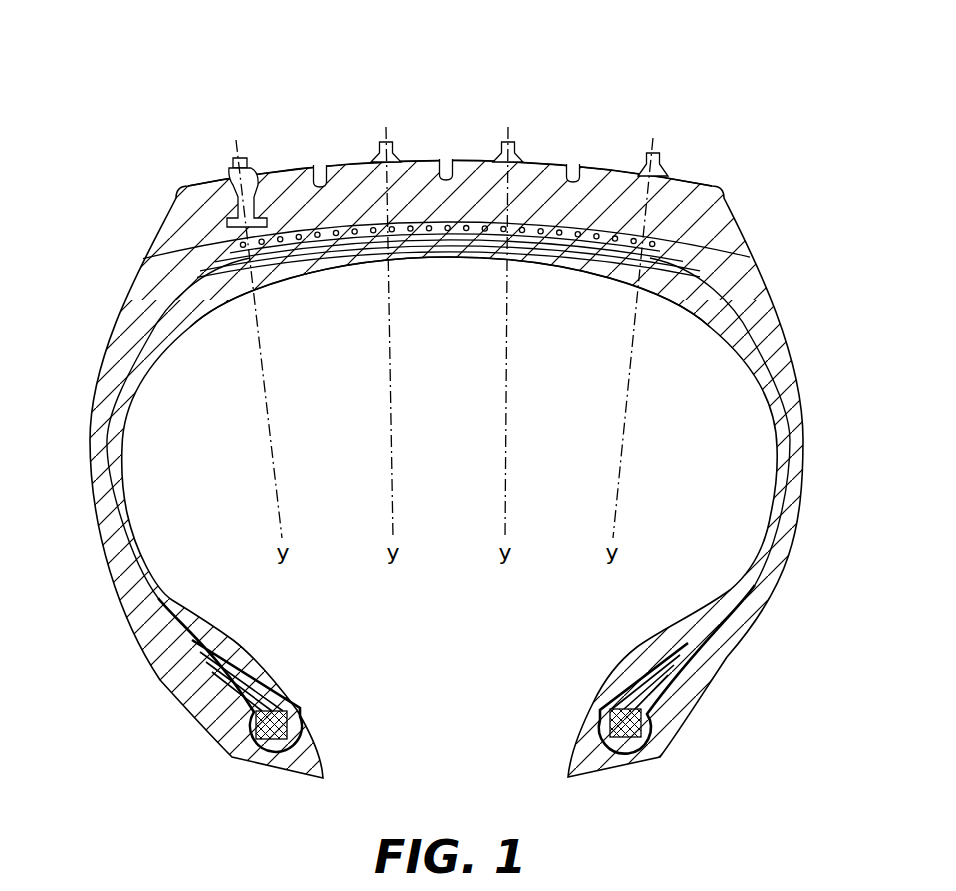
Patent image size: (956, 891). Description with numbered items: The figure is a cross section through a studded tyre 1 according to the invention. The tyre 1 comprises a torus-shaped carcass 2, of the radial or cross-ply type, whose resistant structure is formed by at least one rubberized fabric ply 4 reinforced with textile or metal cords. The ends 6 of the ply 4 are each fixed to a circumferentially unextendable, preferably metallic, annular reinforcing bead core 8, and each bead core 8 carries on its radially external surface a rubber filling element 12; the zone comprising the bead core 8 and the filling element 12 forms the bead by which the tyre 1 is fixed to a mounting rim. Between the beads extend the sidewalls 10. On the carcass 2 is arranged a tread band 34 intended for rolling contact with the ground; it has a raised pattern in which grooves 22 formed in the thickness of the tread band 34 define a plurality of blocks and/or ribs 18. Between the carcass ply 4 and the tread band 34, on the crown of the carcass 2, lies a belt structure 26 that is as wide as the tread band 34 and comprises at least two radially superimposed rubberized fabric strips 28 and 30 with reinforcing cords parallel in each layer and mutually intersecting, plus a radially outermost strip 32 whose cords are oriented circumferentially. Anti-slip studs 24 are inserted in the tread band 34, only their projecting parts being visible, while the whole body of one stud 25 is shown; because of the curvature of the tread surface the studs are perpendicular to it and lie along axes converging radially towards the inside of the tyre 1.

The studded tyre 1 is at (748, 160).
The carcass 2 is at (187, 327).
The rubberized fabric ply 4 is at (787, 428).
The ends of the ply 6 is at (187, 635).
The reinforcing bead core 8 is at (287, 727).
The sidewalls 10 is at (90, 440).
The rubber filling element 12 is at (237, 683).
The blocks and/or ribs 18 is at (197, 185).
The grooves 22 is at (321, 166).
The studs 24 is at (386, 141).
The stud 25 is at (238, 157).
The belt structure 26 is at (690, 257).
The rubberized fabric strip 28 is at (363, 266).
The rubberized fabric strip 30 is at (600, 262).
The radially outermost strip 32 is at (440, 246).
The tread band 34 is at (462, 152).